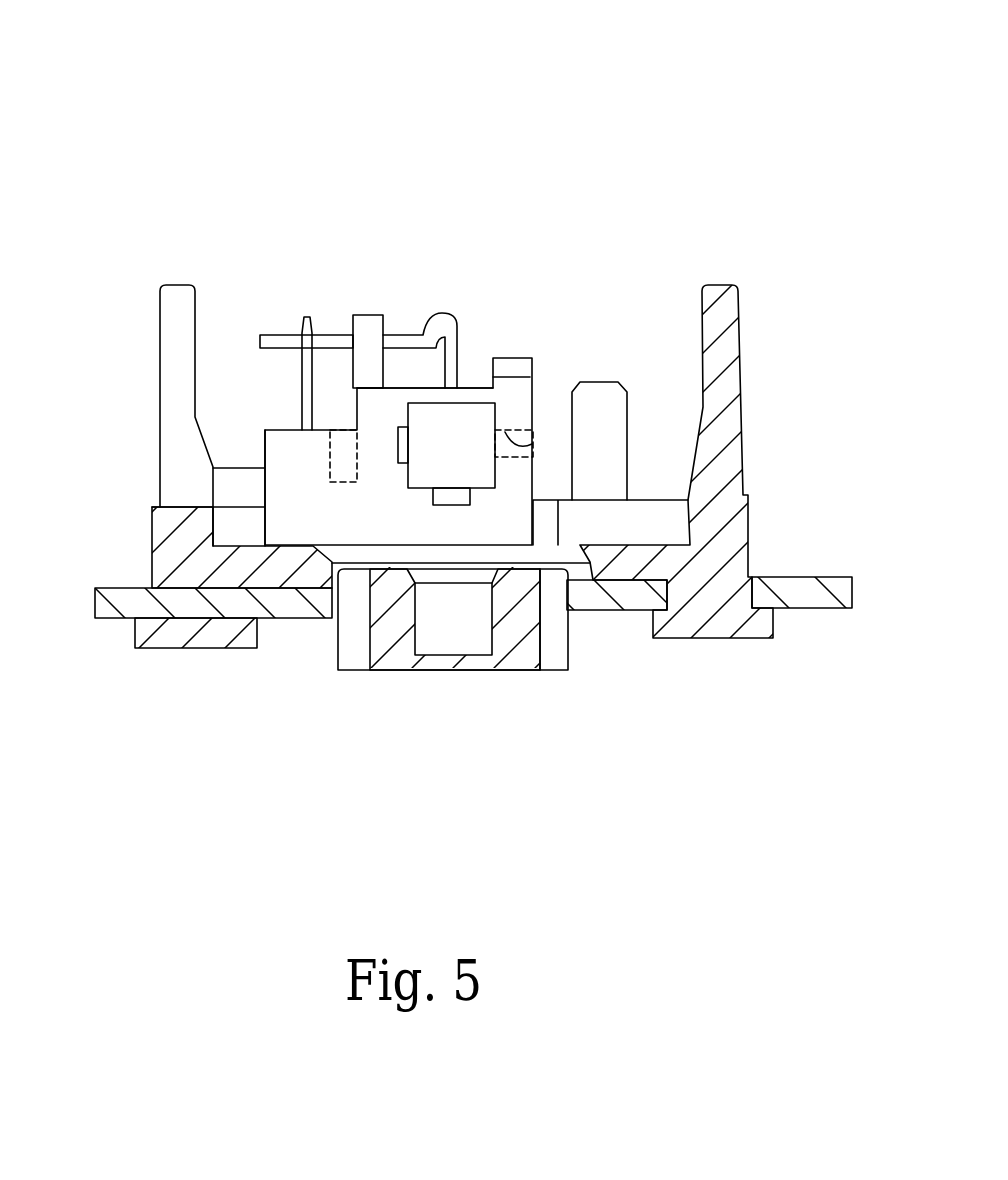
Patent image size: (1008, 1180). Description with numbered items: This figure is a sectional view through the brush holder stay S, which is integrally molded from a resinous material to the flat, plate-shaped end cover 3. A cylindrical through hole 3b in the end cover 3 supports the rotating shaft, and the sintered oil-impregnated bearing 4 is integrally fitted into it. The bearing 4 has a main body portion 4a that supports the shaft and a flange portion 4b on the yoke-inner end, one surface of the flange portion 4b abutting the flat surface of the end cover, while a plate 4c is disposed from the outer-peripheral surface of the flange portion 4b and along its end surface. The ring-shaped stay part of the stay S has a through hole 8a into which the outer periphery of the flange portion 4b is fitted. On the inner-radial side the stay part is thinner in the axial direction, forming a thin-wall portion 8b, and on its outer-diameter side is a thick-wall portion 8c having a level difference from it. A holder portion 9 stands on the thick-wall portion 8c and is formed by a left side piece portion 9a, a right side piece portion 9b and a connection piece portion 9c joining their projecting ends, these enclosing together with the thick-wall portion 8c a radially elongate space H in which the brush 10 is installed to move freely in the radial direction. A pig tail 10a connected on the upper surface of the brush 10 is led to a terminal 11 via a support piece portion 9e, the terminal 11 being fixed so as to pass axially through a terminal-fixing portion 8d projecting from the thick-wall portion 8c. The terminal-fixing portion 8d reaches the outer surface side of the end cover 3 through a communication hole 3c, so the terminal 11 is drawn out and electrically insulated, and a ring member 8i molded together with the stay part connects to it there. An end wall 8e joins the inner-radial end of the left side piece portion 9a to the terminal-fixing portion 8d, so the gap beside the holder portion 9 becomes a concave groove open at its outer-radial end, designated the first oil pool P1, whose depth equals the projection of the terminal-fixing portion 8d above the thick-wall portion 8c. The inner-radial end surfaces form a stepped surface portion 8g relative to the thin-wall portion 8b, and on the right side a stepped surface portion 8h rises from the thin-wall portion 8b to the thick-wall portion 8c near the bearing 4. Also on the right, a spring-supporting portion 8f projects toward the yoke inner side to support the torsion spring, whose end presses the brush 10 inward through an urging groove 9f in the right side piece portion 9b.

The end cover 3 is at (233, 605).
The through hole 3b is at (542, 566).
The communication hole 3c is at (752, 588).
The sintered oil-impregnated bearing 4 is at (402, 634).
The main body portion 4a is at (513, 610).
The flange portion 4b is at (353, 582).
The plate 4c is at (570, 613).
The through hole 8a is at (587, 620).
The thin-wall portion 8b is at (247, 565).
The thick-wall portion 8c is at (177, 515).
The terminal-fixing portion 8d is at (277, 460).
The end wall 8e is at (337, 475).
The spring-supporting portion 8f is at (594, 405).
The stepped surface portion 8g is at (395, 522).
The stepped surface portion 8h is at (567, 523).
The ring member 8i is at (170, 637).
The holder portion 9 is at (462, 395).
The left side piece portion 9a is at (377, 407).
The right side piece portion 9b is at (536, 386).
The connection piece portion 9c is at (481, 350).
The support piece portion 9e is at (368, 330).
The urging groove 9f is at (540, 433).
The brush 10 is at (452, 457).
The pig tail 10a is at (444, 316).
The terminal 11 is at (303, 397).
The first oil pool P1 is at (343, 447).
The space H is at (434, 412).
The brush holder stay S is at (802, 322).